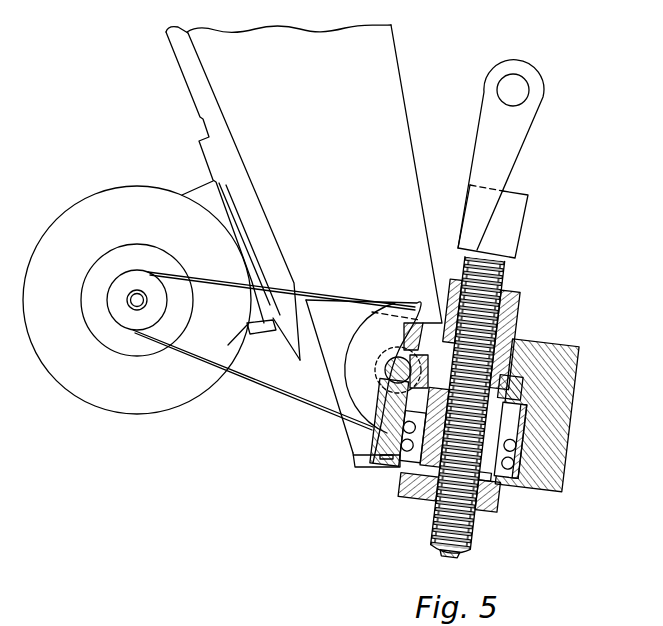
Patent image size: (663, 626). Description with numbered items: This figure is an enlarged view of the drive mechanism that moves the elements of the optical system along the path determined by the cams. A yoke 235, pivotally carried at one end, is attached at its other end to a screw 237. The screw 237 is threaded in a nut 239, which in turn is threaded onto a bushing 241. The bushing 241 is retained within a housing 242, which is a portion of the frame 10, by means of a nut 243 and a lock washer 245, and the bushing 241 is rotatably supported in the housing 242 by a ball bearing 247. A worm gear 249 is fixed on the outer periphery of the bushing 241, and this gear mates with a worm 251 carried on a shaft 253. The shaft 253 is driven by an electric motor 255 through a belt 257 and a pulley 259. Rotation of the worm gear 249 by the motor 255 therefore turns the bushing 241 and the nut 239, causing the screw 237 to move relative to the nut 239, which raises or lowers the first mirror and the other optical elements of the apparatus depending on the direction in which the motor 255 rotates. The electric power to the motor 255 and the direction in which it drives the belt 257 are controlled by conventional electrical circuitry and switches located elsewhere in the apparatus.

The frame 10 is at (193, 77).
The yoke 235 is at (529, 117).
The screw 237 is at (466, 408).
The nut 239 is at (513, 303).
The bushing 241 is at (538, 400).
The housing 242 is at (533, 437).
The nut 243 is at (483, 497).
The lock washer 245 is at (503, 498).
The ball bearing 247 is at (412, 463).
The worm gear 249 is at (525, 379).
The worm 251 is at (383, 380).
The shaft 253 is at (372, 312).
The electric motor 255 is at (88, 385).
The belt 257 is at (253, 383).
The pulley 259 is at (345, 402).